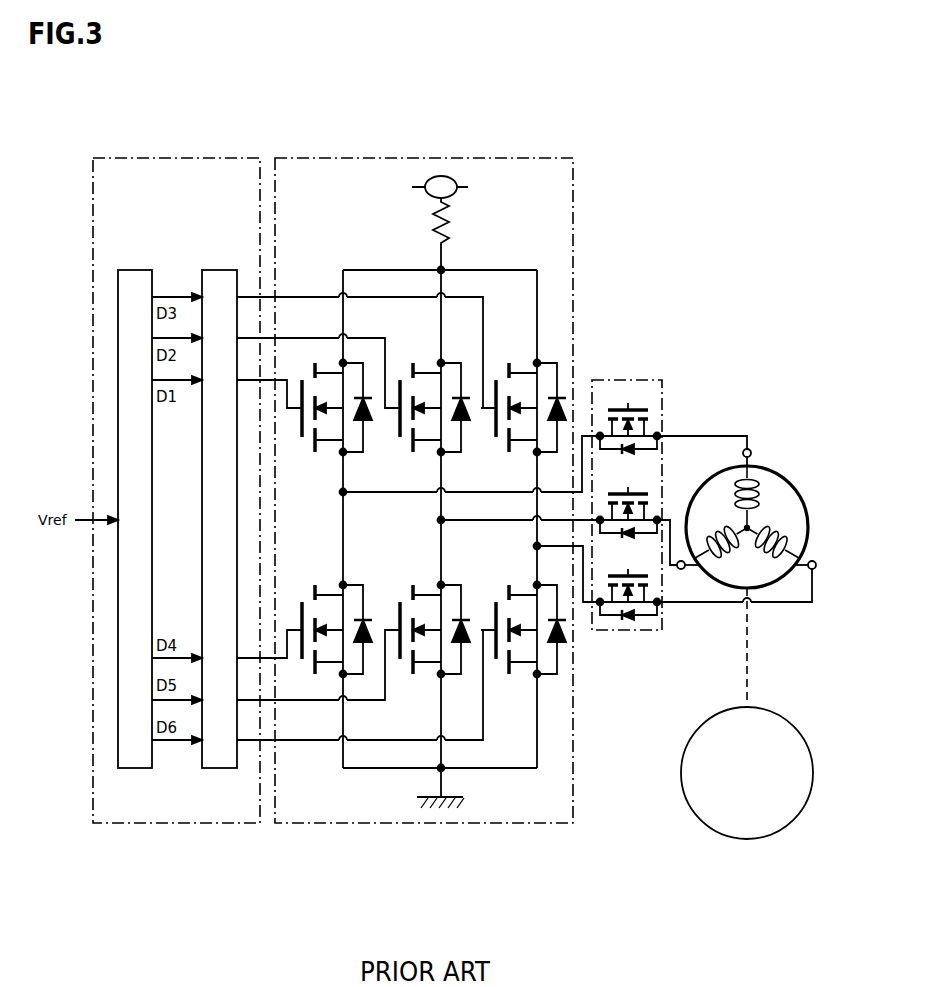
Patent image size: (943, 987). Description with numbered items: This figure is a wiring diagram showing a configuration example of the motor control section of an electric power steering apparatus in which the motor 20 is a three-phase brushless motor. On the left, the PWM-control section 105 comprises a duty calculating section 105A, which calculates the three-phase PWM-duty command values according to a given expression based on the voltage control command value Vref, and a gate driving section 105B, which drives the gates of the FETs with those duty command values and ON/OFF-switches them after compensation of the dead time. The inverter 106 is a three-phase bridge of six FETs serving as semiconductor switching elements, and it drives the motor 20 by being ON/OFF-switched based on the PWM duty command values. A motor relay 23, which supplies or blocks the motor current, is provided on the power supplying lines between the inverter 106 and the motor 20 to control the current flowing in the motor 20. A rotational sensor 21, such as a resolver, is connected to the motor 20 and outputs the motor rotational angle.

The PWM-control section 105 is at (228, 156).
The duty calculating section 105A is at (135, 269).
The gate driving section 105B is at (220, 269).
The inverter 106 is at (552, 156).
The motor relay 23 is at (638, 379).
The motor 20 is at (782, 450).
The rotational sensor 21 is at (773, 708).